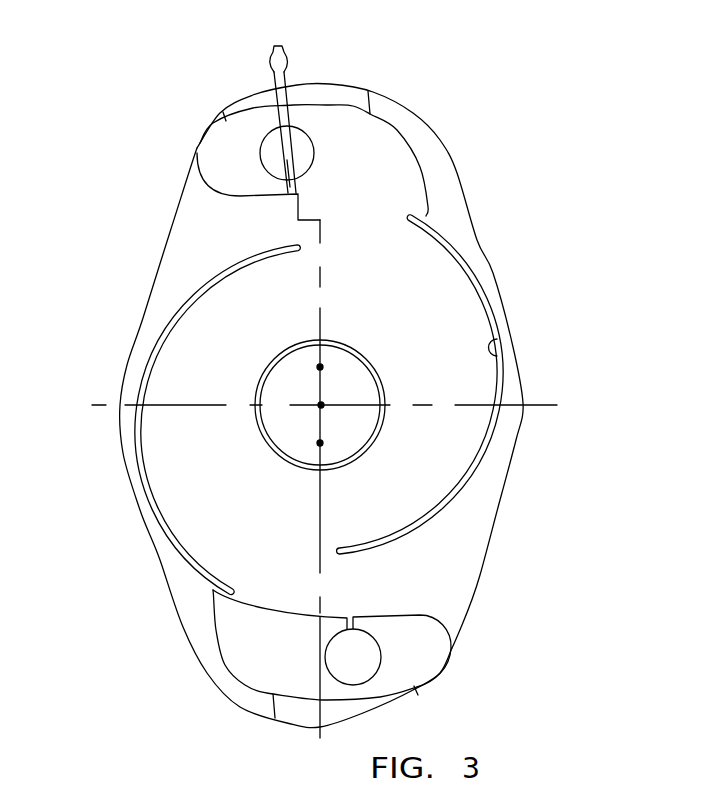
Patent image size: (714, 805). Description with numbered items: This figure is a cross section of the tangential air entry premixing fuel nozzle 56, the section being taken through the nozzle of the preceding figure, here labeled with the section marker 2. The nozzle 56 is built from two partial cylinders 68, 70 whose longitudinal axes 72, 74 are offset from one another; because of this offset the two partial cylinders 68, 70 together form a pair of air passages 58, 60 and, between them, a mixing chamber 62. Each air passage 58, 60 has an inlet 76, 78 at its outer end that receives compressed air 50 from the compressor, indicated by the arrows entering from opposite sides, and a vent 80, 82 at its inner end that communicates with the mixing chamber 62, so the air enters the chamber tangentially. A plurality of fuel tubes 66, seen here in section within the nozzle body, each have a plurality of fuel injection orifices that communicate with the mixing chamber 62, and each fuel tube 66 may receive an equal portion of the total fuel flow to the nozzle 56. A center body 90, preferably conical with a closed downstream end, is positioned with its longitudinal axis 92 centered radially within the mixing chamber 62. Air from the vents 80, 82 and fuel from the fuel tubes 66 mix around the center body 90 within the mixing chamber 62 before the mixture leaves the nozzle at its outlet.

The section line 2- 2 is at (277, 46).
The compressed air 50 is at (117, 245).
The premixing fuel nozzle 56 is at (517, 213).
The air passage 58 is at (263, 217).
The air passage 60 is at (348, 577).
The mixing chamber 62 is at (487, 392).
The fuel tubes 66 is at (306, 134).
The partial cylinder 68 is at (497, 360).
The partial cylinder 70 is at (233, 277).
The longitudinal axis 72 is at (320, 367).
The longitudinal axis 74 is at (320, 443).
The inlet 76 is at (188, 223).
The inlet 78 is at (410, 589).
The vent 80 is at (315, 213).
The vent 82 is at (337, 590).
The center body 90 is at (345, 335).
The longitudinal axis 92 is at (322, 405).